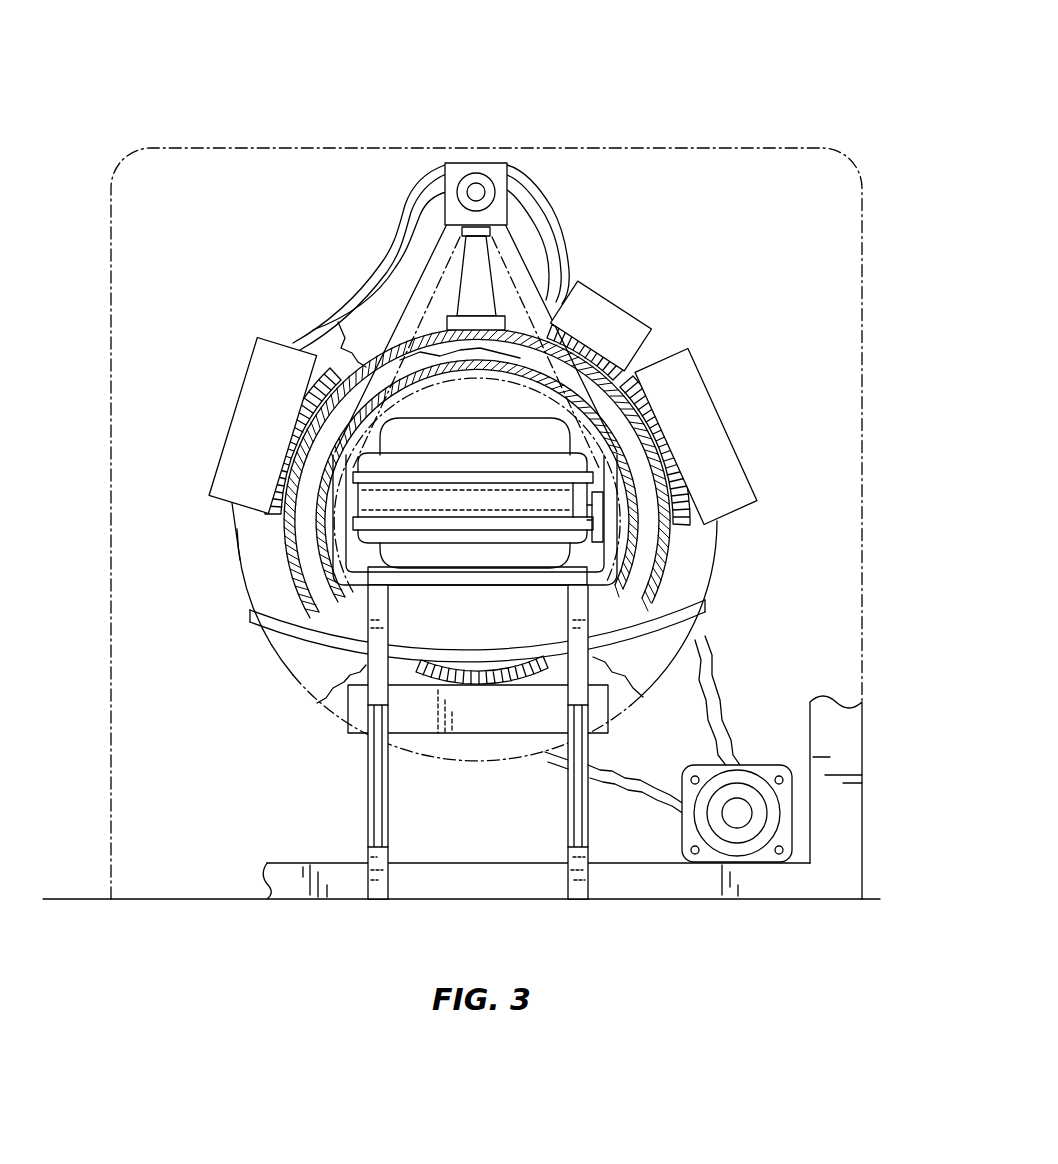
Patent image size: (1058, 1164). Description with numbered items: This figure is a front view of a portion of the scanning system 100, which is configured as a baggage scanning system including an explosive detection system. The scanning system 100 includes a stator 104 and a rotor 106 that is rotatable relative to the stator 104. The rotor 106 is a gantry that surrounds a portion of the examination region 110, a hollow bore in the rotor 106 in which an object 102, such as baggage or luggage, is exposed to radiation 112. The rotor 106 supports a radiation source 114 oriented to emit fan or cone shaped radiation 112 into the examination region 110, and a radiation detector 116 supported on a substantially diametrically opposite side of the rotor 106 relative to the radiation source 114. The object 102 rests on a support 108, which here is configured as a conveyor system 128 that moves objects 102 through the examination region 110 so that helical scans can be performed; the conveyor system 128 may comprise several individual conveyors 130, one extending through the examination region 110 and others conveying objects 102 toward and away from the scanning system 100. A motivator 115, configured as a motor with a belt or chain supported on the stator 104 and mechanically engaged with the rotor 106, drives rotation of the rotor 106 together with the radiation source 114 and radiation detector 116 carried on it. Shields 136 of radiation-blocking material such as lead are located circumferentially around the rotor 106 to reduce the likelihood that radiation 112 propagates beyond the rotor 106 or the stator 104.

The scanning system 100 is at (709, 91).
The object 102 is at (495, 509).
The stator 104 is at (215, 145).
The rotor 106 is at (622, 378).
The support 108 is at (417, 594).
The examination region 110 is at (500, 629).
The radiation 112 is at (700, 567).
The radiation source 114 is at (463, 162).
The motivator 115 is at (740, 810).
The radiation detector 116 is at (290, 603).
The conveyor system 128 is at (340, 811).
The conveyor 130 is at (700, 623).
The shield 136 is at (262, 388).